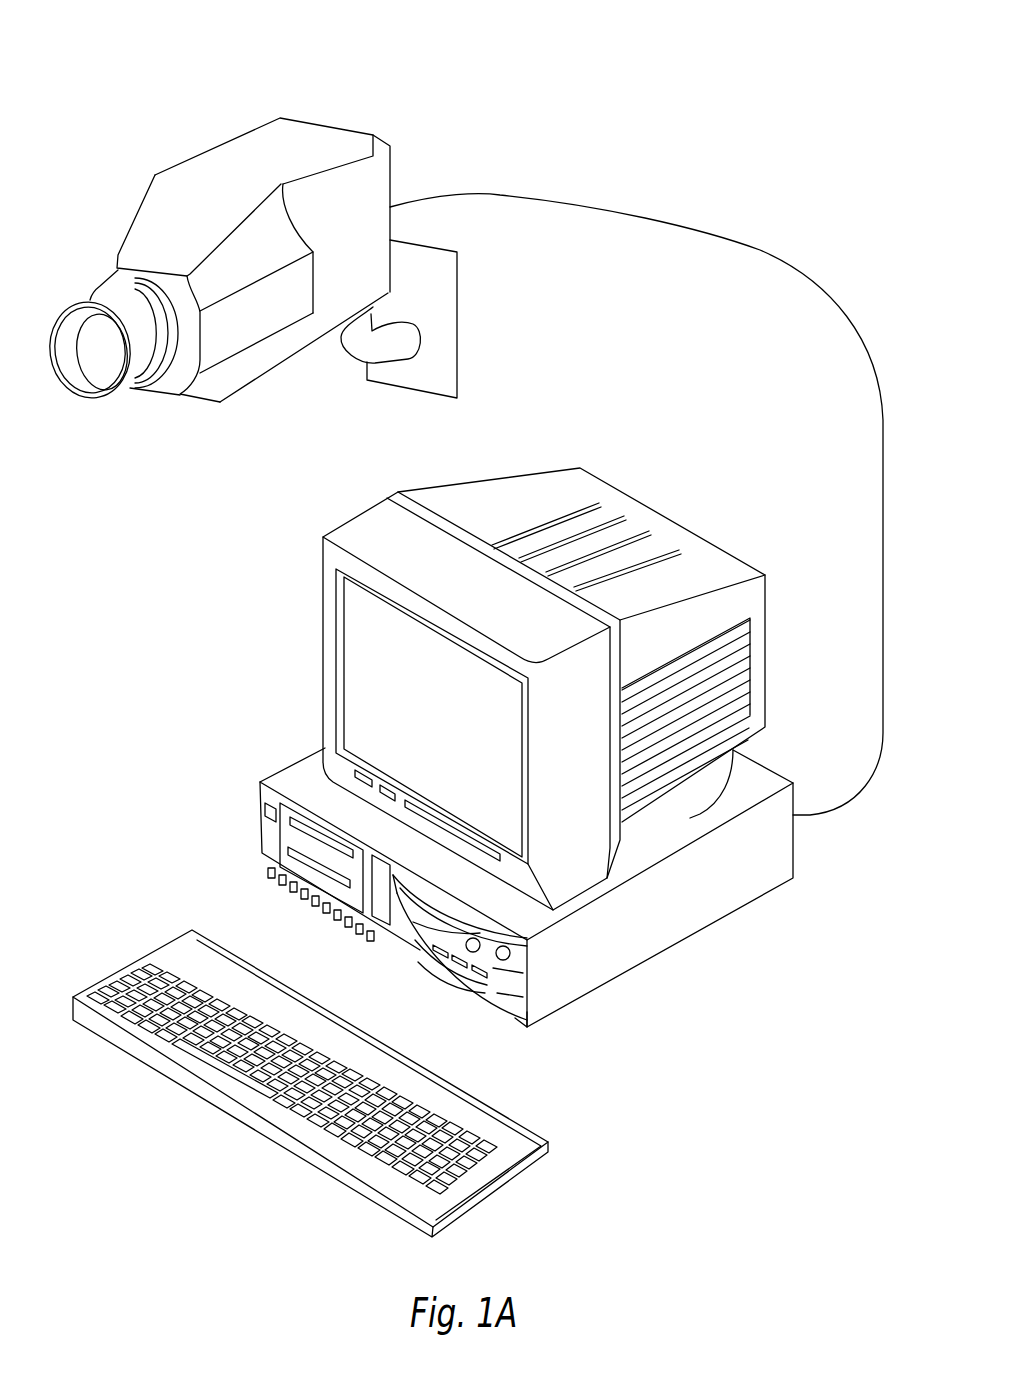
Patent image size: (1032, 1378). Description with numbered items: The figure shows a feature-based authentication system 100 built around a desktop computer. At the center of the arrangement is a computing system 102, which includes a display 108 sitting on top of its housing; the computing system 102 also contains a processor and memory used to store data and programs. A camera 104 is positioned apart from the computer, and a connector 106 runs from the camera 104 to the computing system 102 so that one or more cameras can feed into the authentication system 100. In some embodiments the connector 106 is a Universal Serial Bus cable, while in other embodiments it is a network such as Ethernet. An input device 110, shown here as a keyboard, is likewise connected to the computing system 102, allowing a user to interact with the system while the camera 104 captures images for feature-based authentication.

The feature-based authentication system 100 is at (748, 57).
The computing system 102 is at (658, 950).
The camera 104 is at (228, 160).
The connector 106 is at (745, 241).
The display 108 is at (373, 665).
The input device 110 is at (243, 1120).